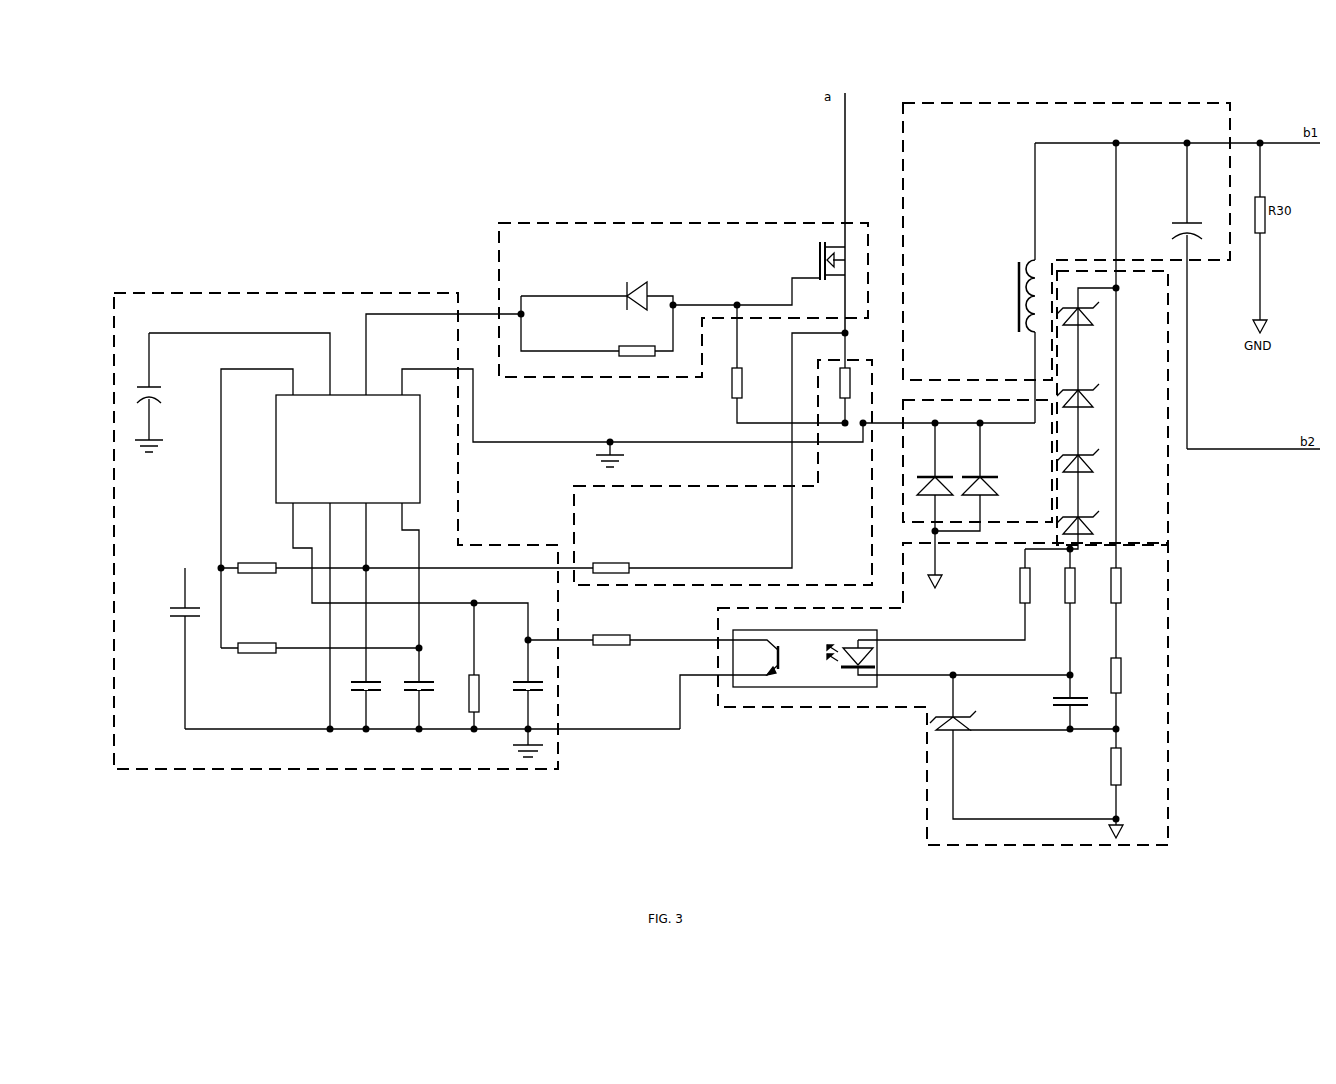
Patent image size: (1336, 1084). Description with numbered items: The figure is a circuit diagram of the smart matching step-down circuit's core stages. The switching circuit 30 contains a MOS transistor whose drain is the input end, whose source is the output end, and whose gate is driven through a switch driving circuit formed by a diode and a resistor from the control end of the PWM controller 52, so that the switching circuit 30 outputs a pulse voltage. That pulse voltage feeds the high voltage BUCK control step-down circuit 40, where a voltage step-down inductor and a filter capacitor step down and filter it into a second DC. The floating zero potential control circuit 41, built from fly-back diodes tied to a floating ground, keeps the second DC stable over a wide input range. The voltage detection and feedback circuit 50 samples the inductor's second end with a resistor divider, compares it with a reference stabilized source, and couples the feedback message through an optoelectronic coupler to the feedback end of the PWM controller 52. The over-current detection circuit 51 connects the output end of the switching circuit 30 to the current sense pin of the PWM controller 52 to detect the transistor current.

The switching circuit 30 is at (736, 240).
The high voltage BUCK control step-down circuit 40 is at (1050, 128).
The floating zero potential control circuit 41 is at (1028, 477).
The voltage detection and feedback circuit 50 is at (938, 789).
The over-current detection circuit 51 is at (578, 527).
The PWM controller 52 is at (237, 308).